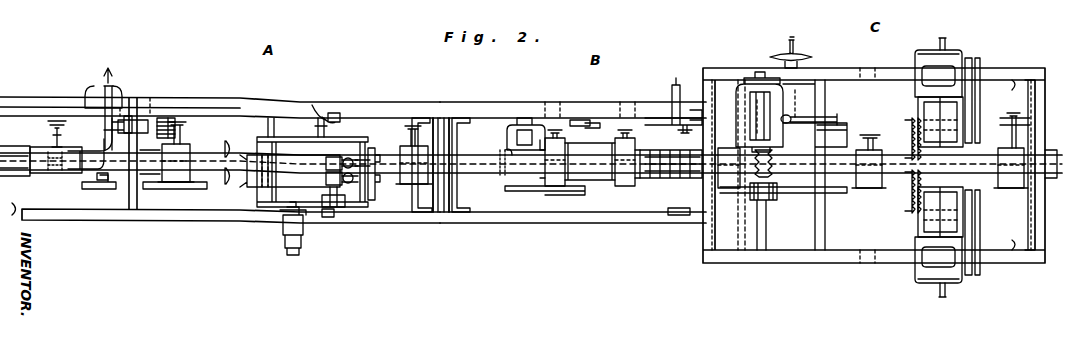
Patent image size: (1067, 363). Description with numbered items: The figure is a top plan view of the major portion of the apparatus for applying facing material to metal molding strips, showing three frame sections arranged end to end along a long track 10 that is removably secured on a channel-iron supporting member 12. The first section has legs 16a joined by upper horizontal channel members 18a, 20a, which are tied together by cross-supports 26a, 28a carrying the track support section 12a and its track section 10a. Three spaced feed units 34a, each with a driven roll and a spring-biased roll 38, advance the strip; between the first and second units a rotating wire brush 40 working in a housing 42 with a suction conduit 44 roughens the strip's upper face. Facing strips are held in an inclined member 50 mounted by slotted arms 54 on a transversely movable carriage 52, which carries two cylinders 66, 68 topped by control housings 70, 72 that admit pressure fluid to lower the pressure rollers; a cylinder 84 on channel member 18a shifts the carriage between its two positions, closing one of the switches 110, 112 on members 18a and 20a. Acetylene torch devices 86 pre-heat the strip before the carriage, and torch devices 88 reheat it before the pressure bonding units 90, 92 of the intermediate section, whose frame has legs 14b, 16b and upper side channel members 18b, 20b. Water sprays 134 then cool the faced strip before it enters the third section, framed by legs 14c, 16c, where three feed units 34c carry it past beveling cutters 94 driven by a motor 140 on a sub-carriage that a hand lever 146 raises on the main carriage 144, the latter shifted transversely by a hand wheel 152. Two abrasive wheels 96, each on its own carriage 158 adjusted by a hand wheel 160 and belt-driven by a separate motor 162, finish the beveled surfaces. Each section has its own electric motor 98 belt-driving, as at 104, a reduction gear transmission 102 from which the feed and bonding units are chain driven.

The track 10 is at (135, 150).
The track section 10a is at (62, 154).
The supporting member 12 is at (207, 141).
The track support section 12a is at (28, 150).
The legs 14b is at (462, 118).
The legs 14c is at (718, 76).
The legs 16a is at (420, 118).
The legs 16b is at (700, 110).
The legs 16c is at (1028, 82).
The upper horizontal channel member 18a is at (212, 222).
The upper side channel member 18b is at (588, 224).
The upper horizontal channel member 20a is at (234, 110).
The upper side channel member 20b is at (580, 112).
The cross-support 26a is at (446, 118).
The cross-support 28a is at (135, 120).
The feed unit 34a is at (178, 183).
The feed unit 34c is at (728, 189).
The spring-biased roll 38 is at (103, 108).
The rotating wire brush 40 is at (53, 172).
The housing 42 is at (40, 175).
The suction conduit 44 is at (88, 172).
The inclined member 50 is at (262, 187).
The carriage 52 is at (302, 137).
The slotted arm 54 is at (270, 128).
The cylinder 66 is at (352, 165).
The cylinder 68 is at (352, 180).
The control housing 70 is at (335, 186).
The control housing 72 is at (340, 158).
The cylinder 84 is at (285, 236).
The acetylene torch devices 86 is at (230, 150).
The acetylene torch devices 88 is at (500, 170).
The pressure bonding unit 90 is at (553, 186).
The pressure bonding unit 92 is at (630, 186).
The beveling cutters 94 is at (776, 192).
The abrasive wheels 96 is at (910, 130).
The electric motor 98 is at (507, 142).
The reduction gear transmission 102 is at (177, 125).
The belt drive 104 is at (172, 189).
The switch 110 is at (330, 218).
The switch 112 is at (336, 115).
The water sprays 134 is at (668, 180).
The motor 140 is at (744, 92).
The main carriage 144 is at (800, 100).
The hand lever 146 is at (832, 117).
The hand wheel 152 is at (800, 53).
The carriage 158 is at (962, 105).
The hand wheel 160 is at (950, 50).
The motor 162 is at (924, 60).